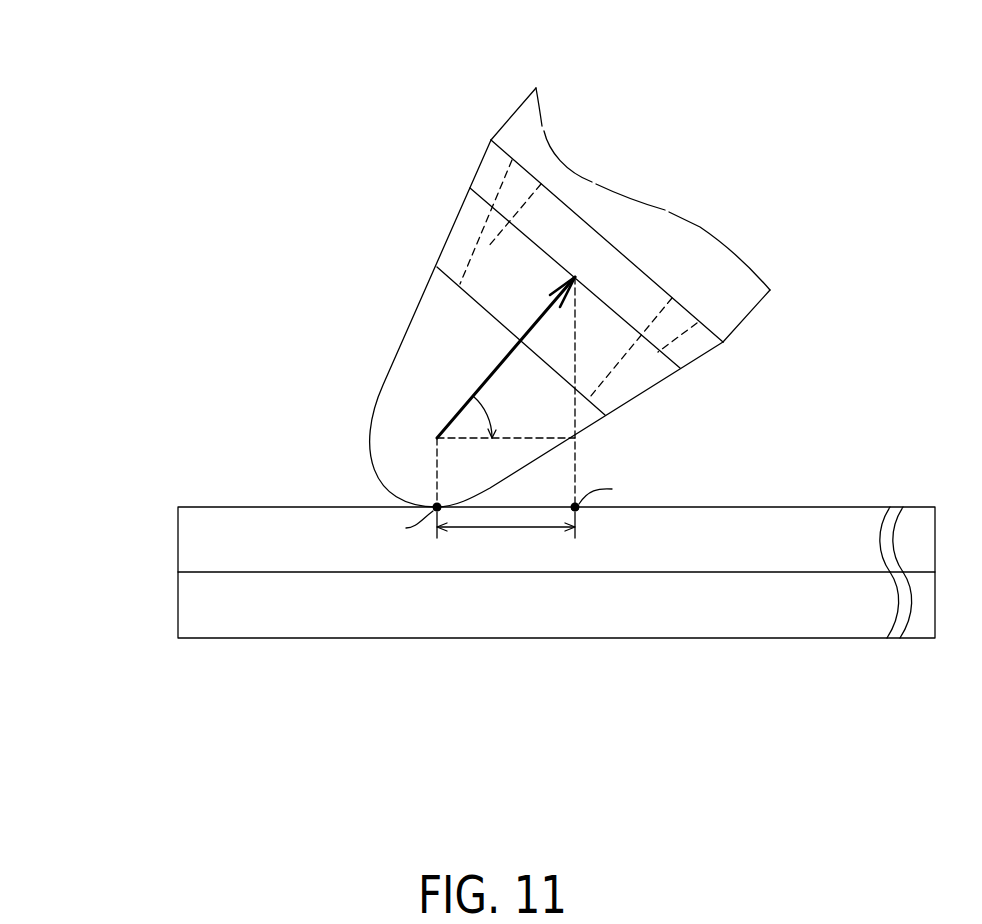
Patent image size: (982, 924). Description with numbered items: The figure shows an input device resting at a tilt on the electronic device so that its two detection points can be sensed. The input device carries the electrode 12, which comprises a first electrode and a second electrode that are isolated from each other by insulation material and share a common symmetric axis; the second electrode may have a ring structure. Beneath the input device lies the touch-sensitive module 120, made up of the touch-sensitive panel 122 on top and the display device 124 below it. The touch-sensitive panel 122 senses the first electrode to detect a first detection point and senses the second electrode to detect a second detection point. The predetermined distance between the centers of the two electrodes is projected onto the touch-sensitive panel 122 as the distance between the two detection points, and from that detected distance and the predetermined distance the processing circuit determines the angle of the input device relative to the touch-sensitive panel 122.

The electrode 12 is at (378, 95).
The touch-sensitive module 120 is at (112, 518).
The touch-sensitive panel 122 is at (188, 547).
The display device 124 is at (188, 612).